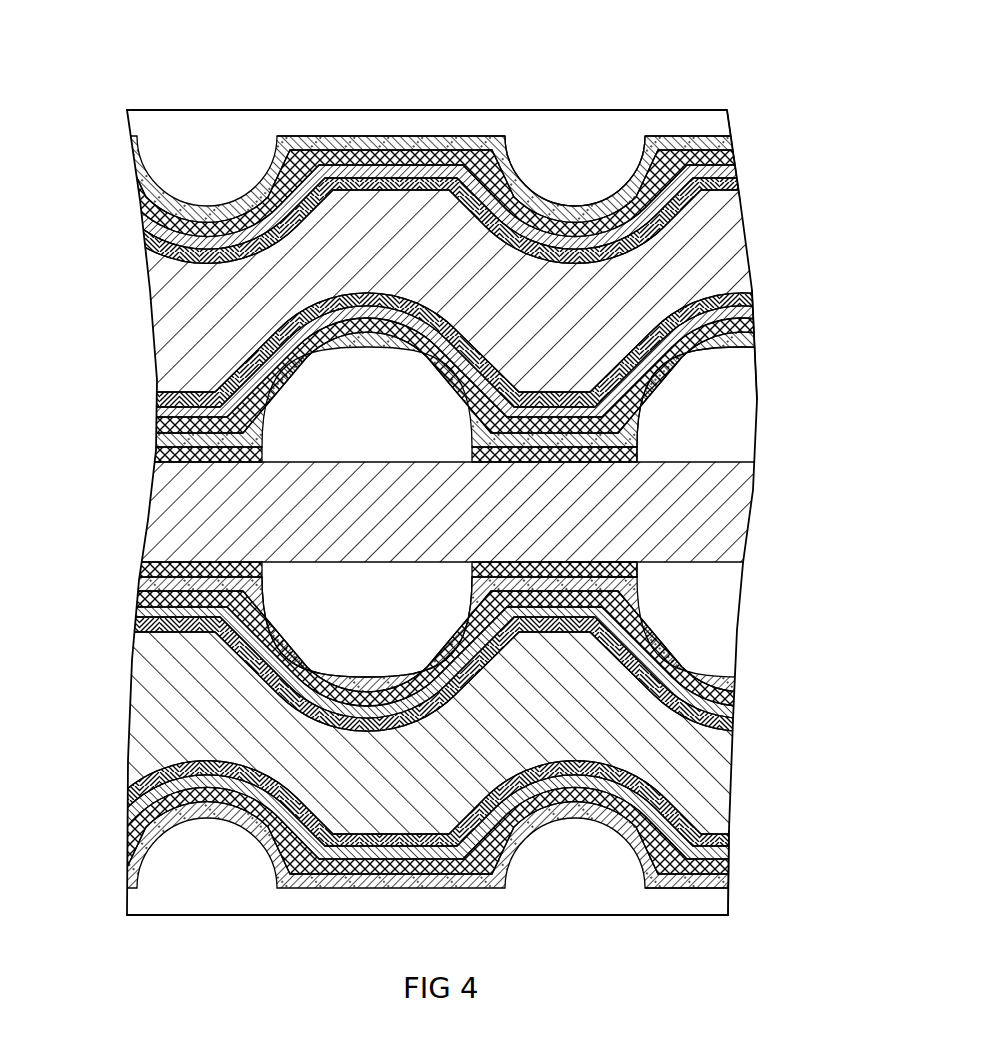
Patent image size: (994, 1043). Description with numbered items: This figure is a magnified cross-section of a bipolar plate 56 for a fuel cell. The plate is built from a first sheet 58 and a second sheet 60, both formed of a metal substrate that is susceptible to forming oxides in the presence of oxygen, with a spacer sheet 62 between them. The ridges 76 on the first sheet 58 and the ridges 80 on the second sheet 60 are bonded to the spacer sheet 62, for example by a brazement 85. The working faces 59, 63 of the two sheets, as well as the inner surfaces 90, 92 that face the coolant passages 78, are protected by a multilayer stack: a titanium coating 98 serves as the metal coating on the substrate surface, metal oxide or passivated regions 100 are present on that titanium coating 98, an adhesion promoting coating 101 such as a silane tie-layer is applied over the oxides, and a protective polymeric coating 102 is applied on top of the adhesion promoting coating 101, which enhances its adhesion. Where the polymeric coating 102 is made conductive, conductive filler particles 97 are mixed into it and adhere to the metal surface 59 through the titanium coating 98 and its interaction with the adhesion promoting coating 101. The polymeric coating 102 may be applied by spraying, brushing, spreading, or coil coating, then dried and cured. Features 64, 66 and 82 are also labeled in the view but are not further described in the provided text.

The bipolar plate 56 is at (100, 105).
The first sheet 58 is at (185, 327).
The working face of first sheet 59 is at (745, 187).
The second sheet 60 is at (180, 695).
The spacer sheet 62 is at (712, 512).
The working face of second sheet 63 is at (740, 830).
The land region 64 is at (395, 178).
The trough 66 is at (563, 207).
The ridges on the first sheet 76 is at (623, 455).
The coolant passages 78 is at (707, 395).
The ridges on the second sheet 80 is at (612, 572).
The cavity 82 is at (323, 577).
The brazement 85 is at (168, 459).
The inner surface of first sheet 90 is at (597, 548).
The inner surface of second sheet 92 is at (757, 288).
The conductive filler particles 97 is at (717, 145).
The titanium coating 98 is at (146, 250).
The metal oxide regions 100 is at (142, 225).
The adhesion promoting coating 101 is at (140, 207).
The protective polymeric coating 102 is at (136, 183).